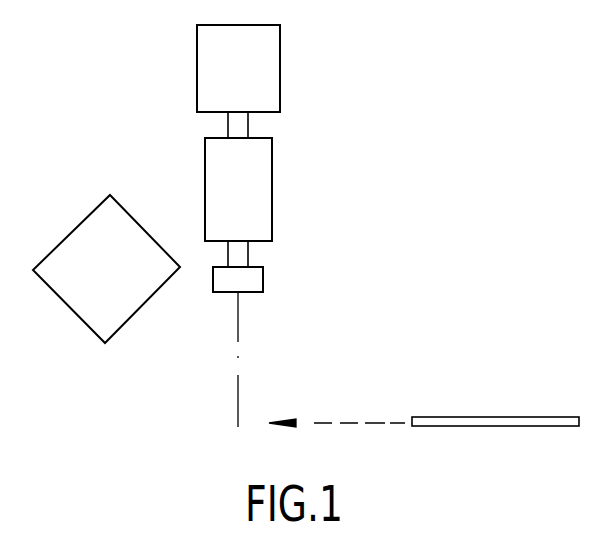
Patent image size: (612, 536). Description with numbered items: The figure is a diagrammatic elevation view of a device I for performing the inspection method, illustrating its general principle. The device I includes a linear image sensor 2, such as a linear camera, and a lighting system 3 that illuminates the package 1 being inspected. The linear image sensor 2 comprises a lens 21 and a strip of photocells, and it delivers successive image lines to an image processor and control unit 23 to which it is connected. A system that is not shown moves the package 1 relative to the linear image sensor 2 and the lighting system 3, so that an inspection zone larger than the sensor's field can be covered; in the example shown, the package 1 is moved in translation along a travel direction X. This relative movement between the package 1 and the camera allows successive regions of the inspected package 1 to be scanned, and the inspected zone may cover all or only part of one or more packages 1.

The package 1 is at (497, 417).
The linear image sensor 2 is at (275, 205).
The lighting system 3 is at (72, 232).
The lens 21 is at (262, 278).
The image processor and control unit 23 is at (272, 67).
The travel direction X is at (355, 422).
The device I is at (459, 124).